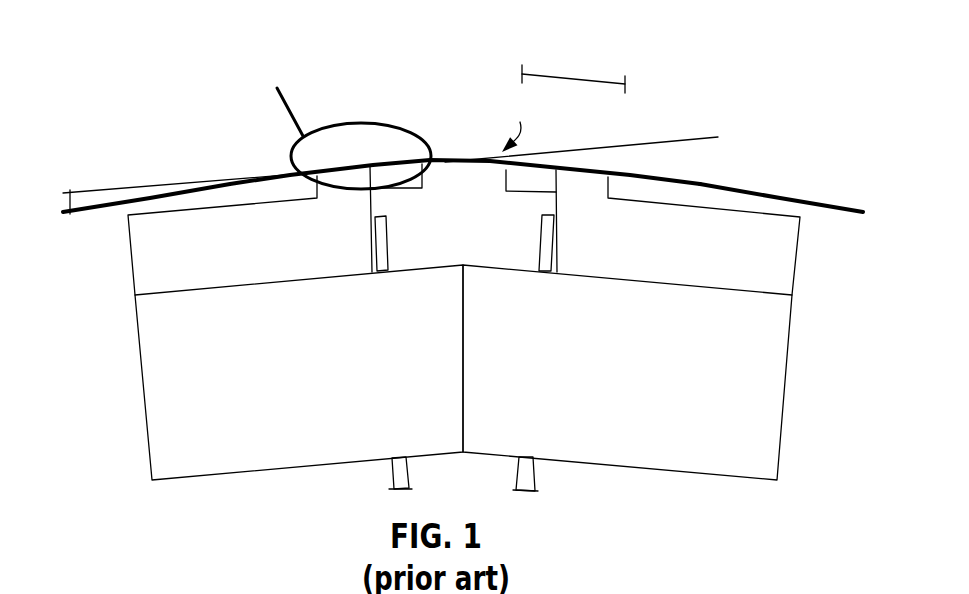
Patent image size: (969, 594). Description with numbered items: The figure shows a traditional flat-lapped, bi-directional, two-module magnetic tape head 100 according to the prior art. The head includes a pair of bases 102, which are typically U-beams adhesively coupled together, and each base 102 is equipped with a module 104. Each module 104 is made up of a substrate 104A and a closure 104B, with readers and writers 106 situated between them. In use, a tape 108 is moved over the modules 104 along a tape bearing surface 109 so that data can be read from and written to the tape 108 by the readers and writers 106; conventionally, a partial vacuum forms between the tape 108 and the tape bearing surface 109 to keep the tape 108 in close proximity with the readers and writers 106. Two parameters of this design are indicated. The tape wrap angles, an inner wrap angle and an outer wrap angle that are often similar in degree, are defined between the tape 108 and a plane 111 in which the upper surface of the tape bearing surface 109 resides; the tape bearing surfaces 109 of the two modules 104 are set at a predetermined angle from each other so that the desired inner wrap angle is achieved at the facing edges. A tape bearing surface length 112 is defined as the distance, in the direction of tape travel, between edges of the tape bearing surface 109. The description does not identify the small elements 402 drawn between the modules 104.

The magnetic tape head 100 is at (230, 116).
The base 102 is at (138, 363).
The module 104 is at (130, 260).
The substrate 104A is at (193, 237).
The closure 104B is at (505, 177).
The readers and writers 106 is at (370, 148).
The tape 108 is at (792, 196).
The tape bearing surface 109 is at (590, 150).
The plane 111 is at (695, 137).
The tape bearing surface length 112 is at (596, 62).
The spacer 402 is at (386, 229).